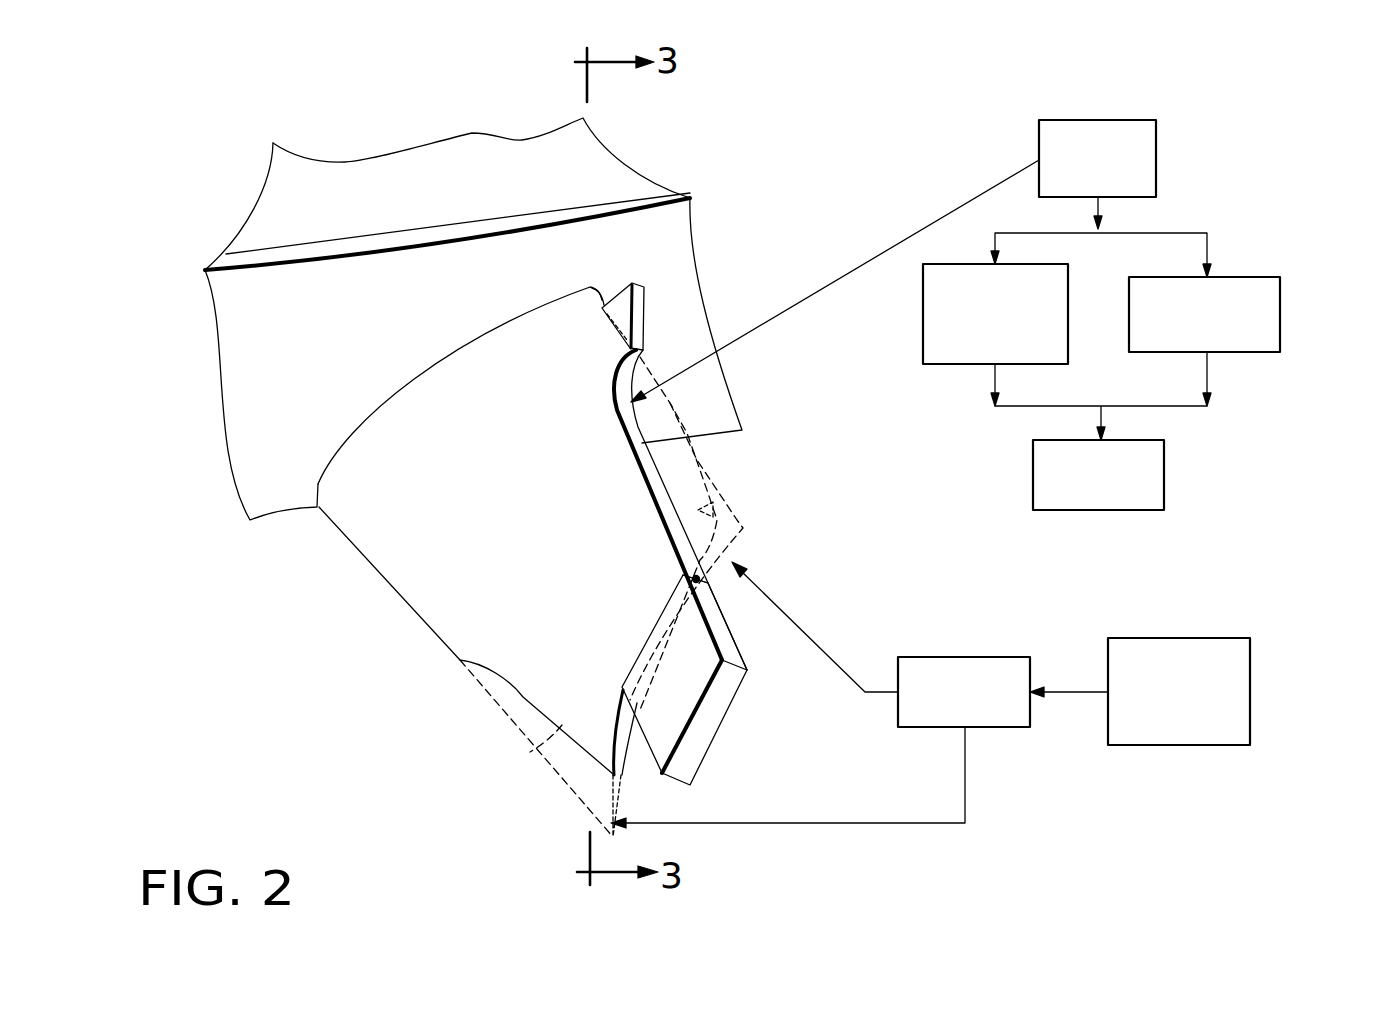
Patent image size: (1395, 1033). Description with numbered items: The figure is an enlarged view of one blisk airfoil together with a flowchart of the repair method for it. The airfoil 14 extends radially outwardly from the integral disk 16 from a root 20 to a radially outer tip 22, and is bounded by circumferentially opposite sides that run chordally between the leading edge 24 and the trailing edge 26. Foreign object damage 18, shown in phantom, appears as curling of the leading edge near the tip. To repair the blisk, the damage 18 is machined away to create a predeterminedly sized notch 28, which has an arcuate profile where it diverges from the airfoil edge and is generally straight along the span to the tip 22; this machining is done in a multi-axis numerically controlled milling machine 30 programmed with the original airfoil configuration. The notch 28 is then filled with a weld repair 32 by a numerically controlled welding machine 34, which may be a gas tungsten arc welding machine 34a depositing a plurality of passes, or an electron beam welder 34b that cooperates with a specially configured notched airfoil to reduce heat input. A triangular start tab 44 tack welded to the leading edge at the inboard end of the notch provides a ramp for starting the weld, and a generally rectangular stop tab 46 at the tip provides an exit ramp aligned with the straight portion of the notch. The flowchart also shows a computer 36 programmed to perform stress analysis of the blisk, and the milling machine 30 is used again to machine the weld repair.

The airfoil 14 is at (535, 510).
The integral disk 16 is at (598, 154).
The foreign object damage 18 is at (713, 506).
The root 20 is at (422, 372).
The tip 22 is at (625, 743).
The leading edge 24 is at (604, 306).
The trailing edge 26 is at (410, 607).
The notch 28 is at (672, 525).
The milling machine 30 is at (1165, 485).
The weld repair 32 is at (672, 403).
The welding machine 34 is at (1158, 165).
The gas tungsten arc welding machine 34a is at (963, 365).
The electron beam welder 34b is at (1281, 307).
The computer 36 is at (1160, 638).
The start tab 44 is at (643, 310).
The stop tab 46 is at (730, 653).